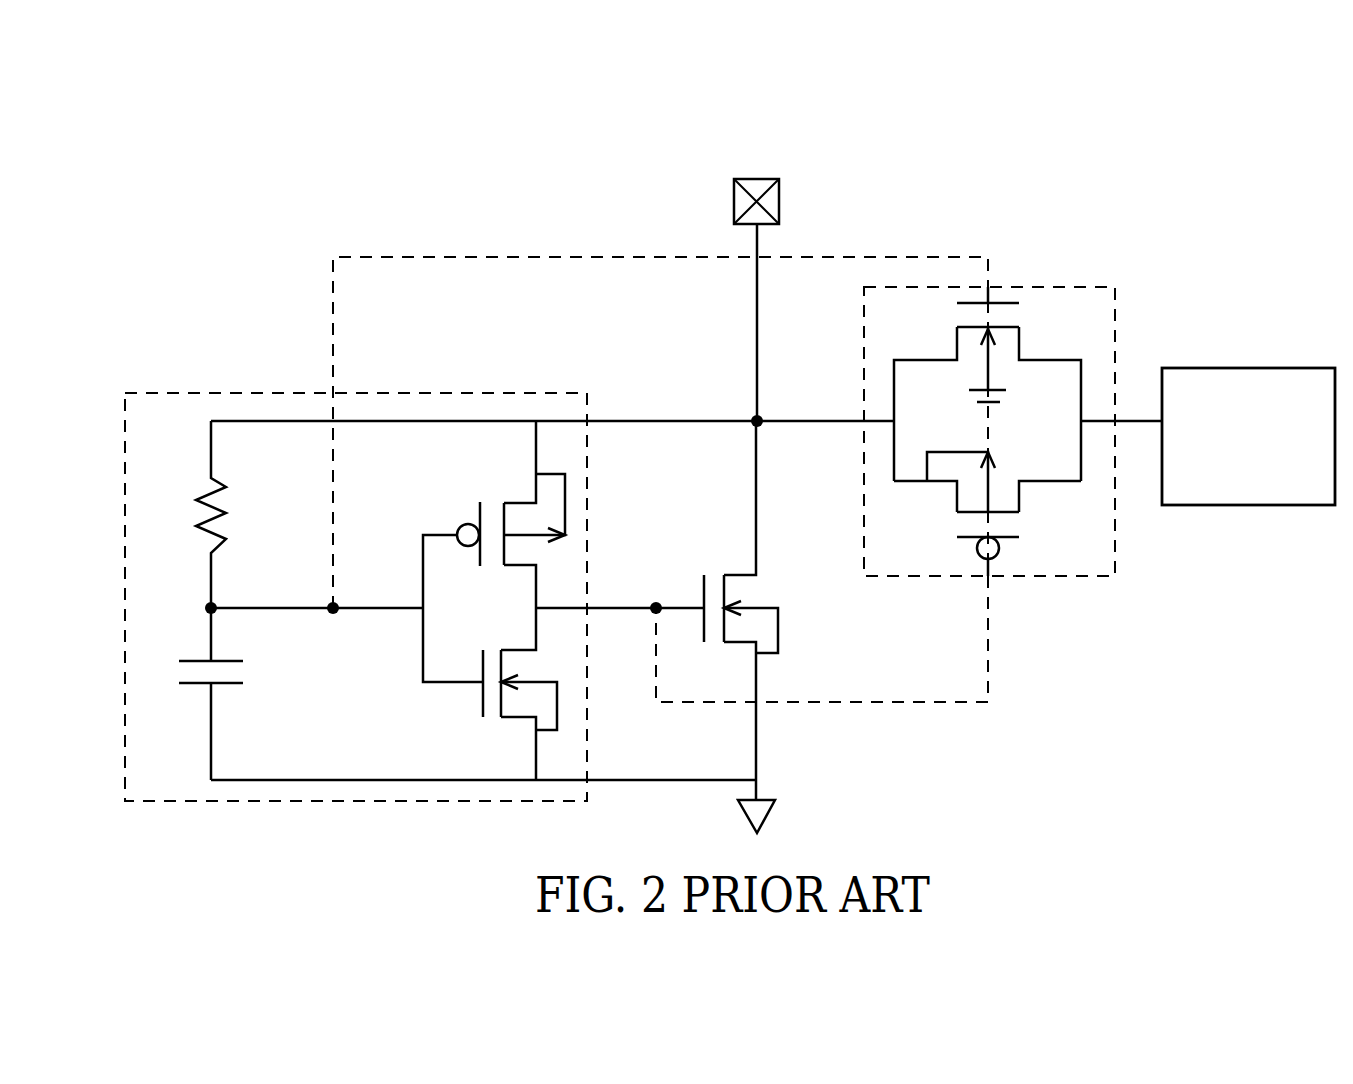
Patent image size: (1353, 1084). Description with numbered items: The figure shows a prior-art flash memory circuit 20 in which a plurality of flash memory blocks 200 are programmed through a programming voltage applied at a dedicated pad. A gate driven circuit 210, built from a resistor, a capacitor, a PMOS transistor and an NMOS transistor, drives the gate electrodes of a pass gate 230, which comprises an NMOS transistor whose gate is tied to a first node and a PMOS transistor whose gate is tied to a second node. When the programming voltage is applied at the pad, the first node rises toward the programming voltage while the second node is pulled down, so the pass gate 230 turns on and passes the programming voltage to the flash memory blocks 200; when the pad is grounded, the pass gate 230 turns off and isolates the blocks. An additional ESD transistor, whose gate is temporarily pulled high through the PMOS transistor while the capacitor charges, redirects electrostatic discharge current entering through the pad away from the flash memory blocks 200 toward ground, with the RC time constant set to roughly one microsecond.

The flash memory circuit 20 is at (1178, 138).
The flash memory blocks 200 is at (1222, 368).
The gate driven circuit 210 is at (200, 393).
The pass gate 230 is at (1040, 287).